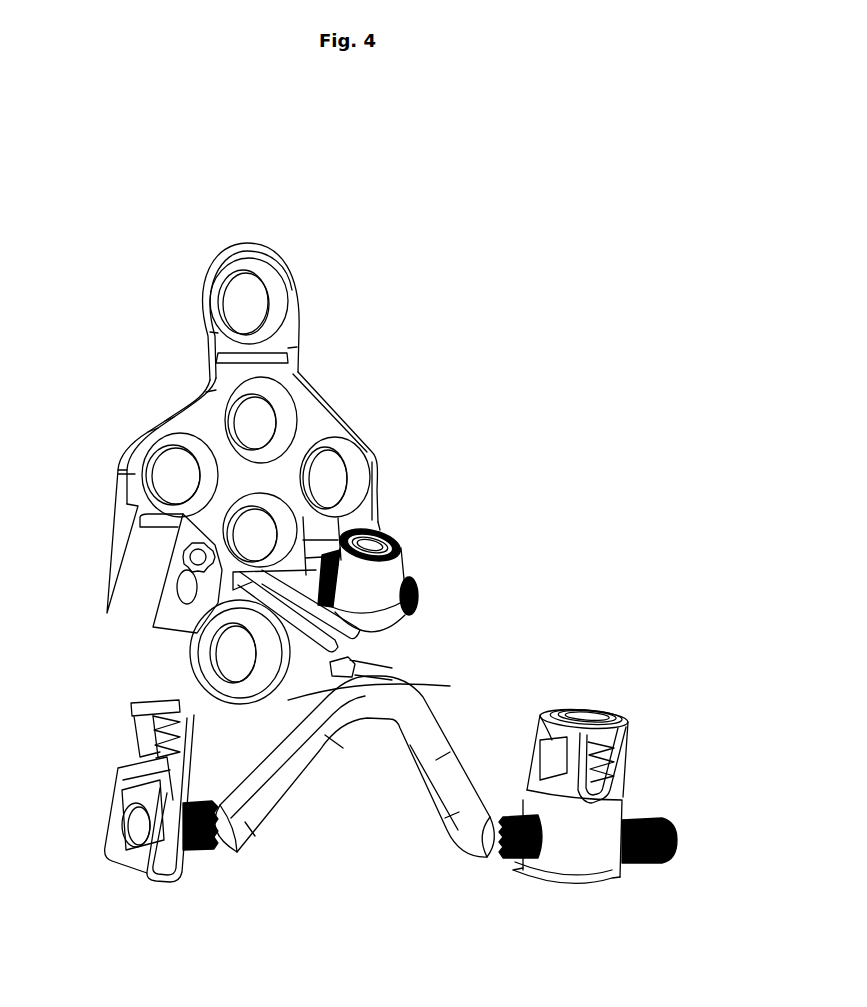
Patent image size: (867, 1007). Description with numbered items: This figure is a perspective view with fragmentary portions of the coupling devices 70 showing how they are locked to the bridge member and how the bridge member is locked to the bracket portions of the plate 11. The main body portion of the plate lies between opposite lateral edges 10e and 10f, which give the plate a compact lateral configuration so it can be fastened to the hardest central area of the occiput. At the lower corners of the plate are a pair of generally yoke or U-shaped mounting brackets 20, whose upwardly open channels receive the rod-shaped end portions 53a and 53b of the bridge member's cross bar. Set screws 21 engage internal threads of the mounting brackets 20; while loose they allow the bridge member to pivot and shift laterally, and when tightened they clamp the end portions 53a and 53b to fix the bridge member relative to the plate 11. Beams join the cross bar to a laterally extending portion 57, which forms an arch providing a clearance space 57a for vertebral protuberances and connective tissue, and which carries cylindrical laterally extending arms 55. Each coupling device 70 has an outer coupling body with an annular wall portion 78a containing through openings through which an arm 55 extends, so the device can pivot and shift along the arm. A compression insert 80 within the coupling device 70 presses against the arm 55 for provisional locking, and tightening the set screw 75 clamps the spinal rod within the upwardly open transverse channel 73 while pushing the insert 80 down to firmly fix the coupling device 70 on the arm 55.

The plate 11 is at (163, 412).
The lateral edge 10e is at (118, 468).
The lateral edge 10f is at (373, 460).
The mounting bracket 20 is at (175, 624).
The set screw 21 is at (183, 555).
The end portion 53a is at (183, 590).
The end portion 53b is at (417, 598).
The laterally extending arm 55 is at (385, 672).
The laterally extending portion 57 is at (370, 710).
The clearance space 57a is at (293, 842).
The coupling device 70 is at (178, 857).
The transverse channel 73 is at (109, 757).
The set screw 75 is at (131, 713).
The annular wall portion 78a is at (107, 872).
The compression insert 80 is at (133, 792).